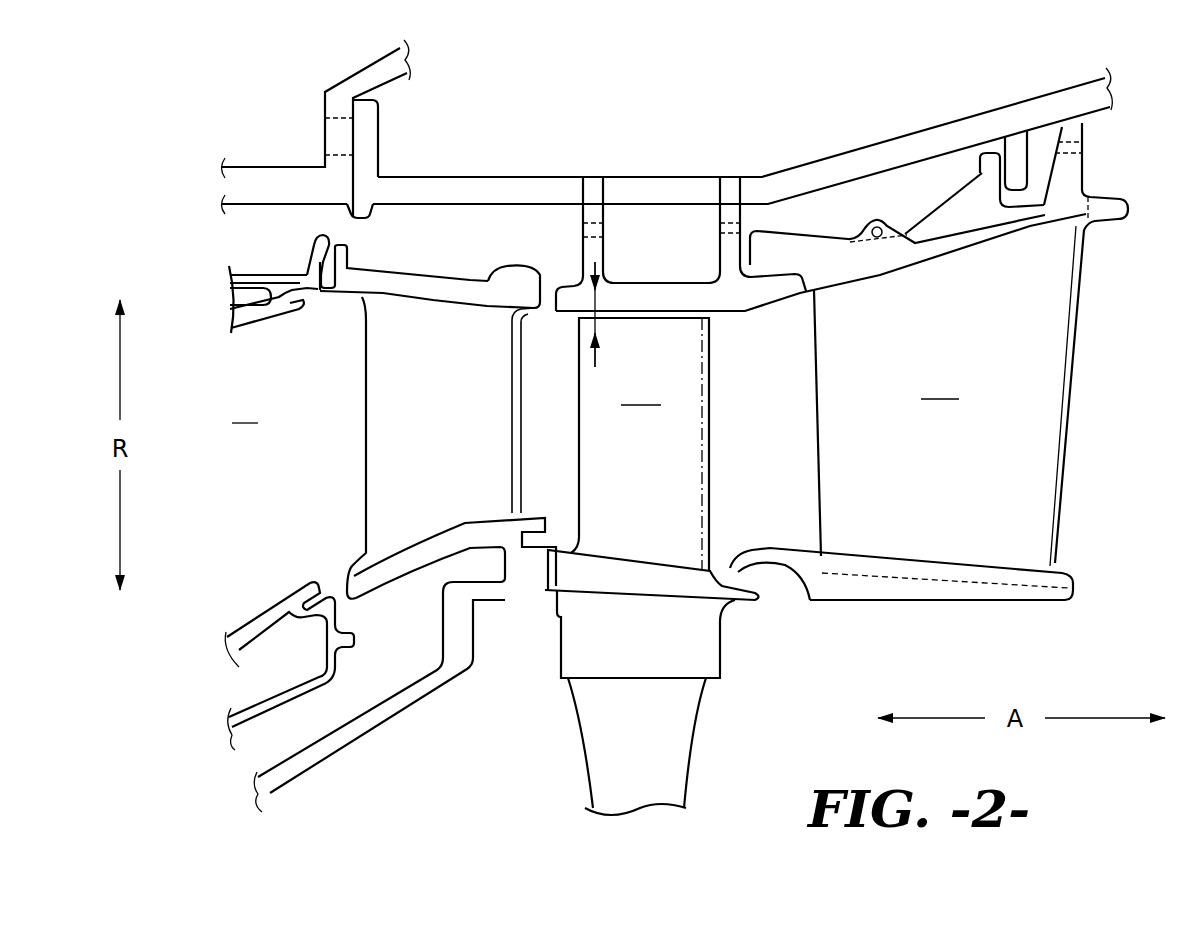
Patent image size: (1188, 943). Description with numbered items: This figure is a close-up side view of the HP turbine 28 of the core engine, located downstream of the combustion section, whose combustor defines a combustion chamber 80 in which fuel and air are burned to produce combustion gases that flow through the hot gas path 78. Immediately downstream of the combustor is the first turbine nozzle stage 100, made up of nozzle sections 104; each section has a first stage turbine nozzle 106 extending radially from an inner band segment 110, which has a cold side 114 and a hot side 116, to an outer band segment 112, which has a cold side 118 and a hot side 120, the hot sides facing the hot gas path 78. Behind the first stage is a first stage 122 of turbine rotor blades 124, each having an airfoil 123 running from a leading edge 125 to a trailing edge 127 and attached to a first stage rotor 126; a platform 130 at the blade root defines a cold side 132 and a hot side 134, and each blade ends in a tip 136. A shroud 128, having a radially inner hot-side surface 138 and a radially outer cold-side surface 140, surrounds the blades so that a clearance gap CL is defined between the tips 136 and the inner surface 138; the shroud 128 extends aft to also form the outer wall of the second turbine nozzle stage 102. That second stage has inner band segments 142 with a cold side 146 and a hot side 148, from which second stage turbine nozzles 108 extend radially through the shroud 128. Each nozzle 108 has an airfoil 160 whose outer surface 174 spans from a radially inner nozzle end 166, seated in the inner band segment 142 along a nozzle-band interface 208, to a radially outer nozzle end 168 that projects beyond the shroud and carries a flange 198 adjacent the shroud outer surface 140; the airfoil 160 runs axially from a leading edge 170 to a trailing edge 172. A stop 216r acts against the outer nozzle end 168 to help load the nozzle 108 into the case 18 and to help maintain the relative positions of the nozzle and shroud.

The HP turbine 28 is at (553, 102).
The case 18 is at (833, 173).
The first turbine nozzle stage 100 is at (403, 257).
The second turbine nozzle stage 102 is at (963, 187).
The turbine nozzle section 104 is at (353, 503).
The first stage turbine nozzle 106 is at (377, 390).
The second stage turbine nozzle 108 is at (1033, 463).
The inner band segment 110 is at (390, 563).
The outer band segment 112 is at (511, 287).
The cold side 114 is at (420, 562).
The hot side 116 is at (420, 520).
The cold side 118 is at (437, 265).
The hot side 120 is at (462, 306).
The first stage of turbine rotor blades 122 is at (630, 233).
The airfoil 123 is at (641, 391).
The turbine rotor blade 124 is at (688, 488).
The leading edge 125 is at (577, 481).
The first stage rotor 126 is at (668, 732).
The trailing edge 127 is at (717, 390).
The shroud 128 is at (1120, 211).
The platform 130 is at (689, 594).
The cold side 132 is at (595, 602).
The hot side 134 is at (607, 546).
The tip 136 is at (690, 303).
The radially inner surface 138 is at (784, 313).
The radially outer surface 140 is at (642, 273).
The inner band segment 142 is at (1000, 592).
The cold side 146 is at (940, 603).
The hot side 148 is at (893, 563).
The airfoil 160 is at (940, 385).
The radially inner nozzle end 166 is at (863, 570).
The radially outer nozzle end 168 is at (952, 217).
The leading edge 170 is at (818, 460).
The trailing edge 172 is at (1067, 393).
The outer surface 174 is at (1035, 290).
The flange 198 is at (787, 250).
The interface 208 is at (1075, 592).
The rail 216r is at (1017, 150).
The hot gas path 78 is at (603, 414).
The combustion chamber 80 is at (273, 344).
The clearance gap CL is at (592, 360).